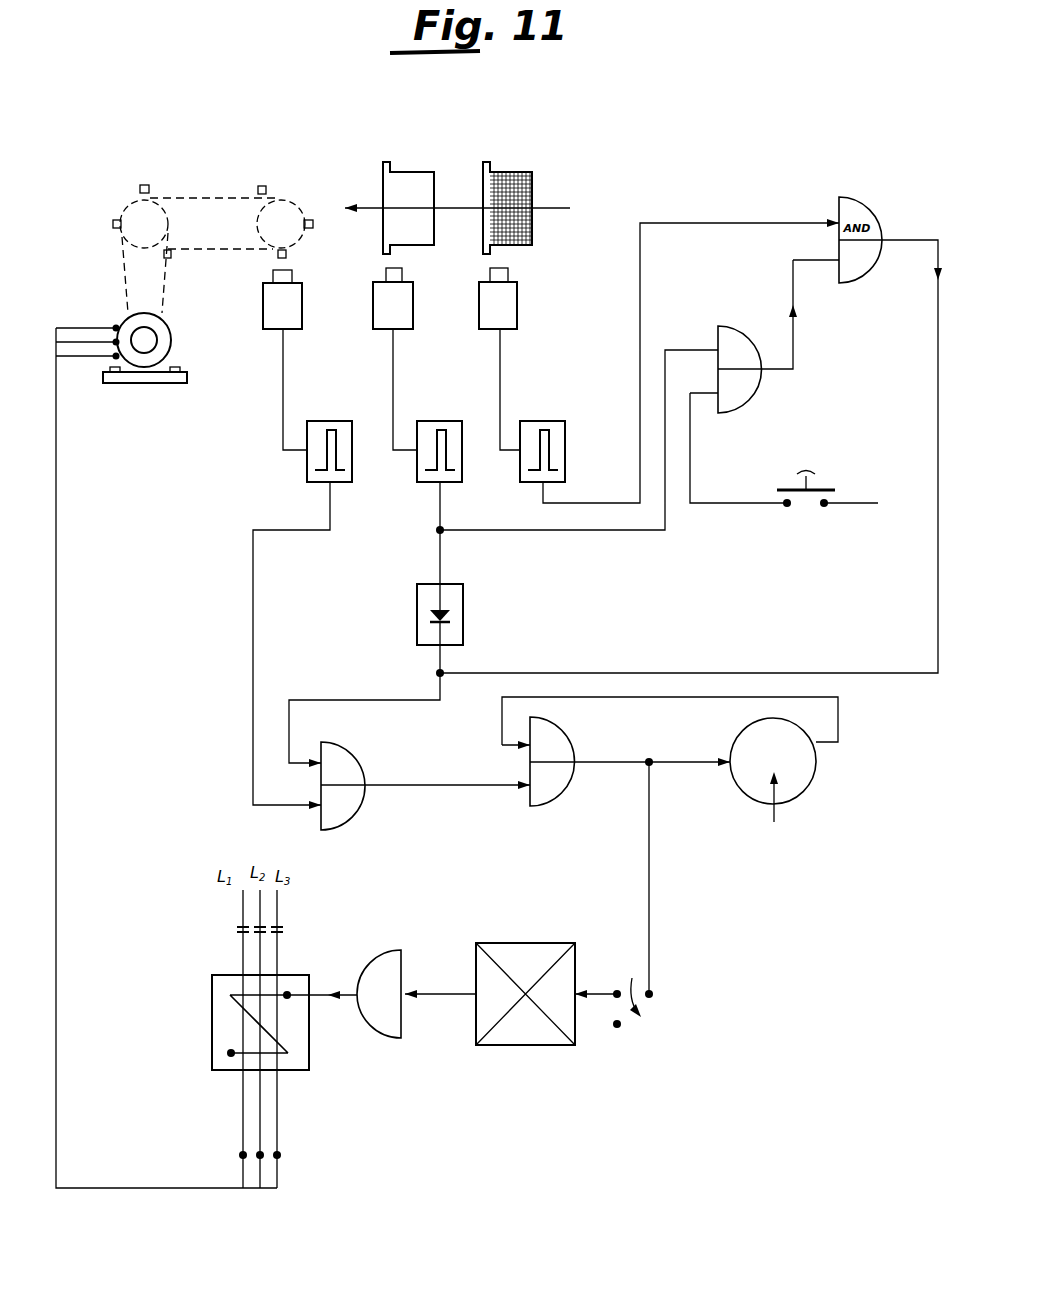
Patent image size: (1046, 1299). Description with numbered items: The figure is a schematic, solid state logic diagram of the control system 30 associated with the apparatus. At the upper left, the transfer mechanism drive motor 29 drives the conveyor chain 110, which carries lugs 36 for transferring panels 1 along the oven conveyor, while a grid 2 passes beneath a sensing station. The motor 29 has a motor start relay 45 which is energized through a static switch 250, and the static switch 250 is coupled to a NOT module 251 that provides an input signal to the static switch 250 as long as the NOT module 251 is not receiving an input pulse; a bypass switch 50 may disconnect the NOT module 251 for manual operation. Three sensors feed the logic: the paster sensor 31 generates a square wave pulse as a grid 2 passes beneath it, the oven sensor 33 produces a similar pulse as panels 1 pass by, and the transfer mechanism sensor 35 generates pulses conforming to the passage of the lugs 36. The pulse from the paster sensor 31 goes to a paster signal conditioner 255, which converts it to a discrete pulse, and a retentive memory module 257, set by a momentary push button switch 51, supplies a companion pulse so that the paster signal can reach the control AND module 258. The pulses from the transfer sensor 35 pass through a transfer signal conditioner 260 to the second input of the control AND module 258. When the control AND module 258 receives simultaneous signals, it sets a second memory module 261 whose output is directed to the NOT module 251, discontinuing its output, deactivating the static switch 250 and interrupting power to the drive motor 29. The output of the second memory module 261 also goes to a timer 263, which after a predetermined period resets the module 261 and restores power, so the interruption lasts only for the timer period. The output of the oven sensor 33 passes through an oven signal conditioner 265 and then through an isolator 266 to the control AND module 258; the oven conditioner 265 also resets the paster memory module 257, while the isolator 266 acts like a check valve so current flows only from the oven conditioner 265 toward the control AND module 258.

The panel 1 is at (415, 174).
The grid 2 is at (518, 174).
The transfer mechanism drive motor 29 is at (117, 310).
The control system 30 is at (710, 836).
The paster sensor 31 is at (503, 306).
The oven sensor 33 is at (382, 310).
The transfer mechanism sensor 35 is at (275, 307).
The lug 36 is at (262, 190).
The motor start relay 45 is at (219, 1022).
The bypass switch 50 is at (656, 1009).
The momentary push button switch 51 is at (793, 506).
The conveyor chain 110 is at (207, 197).
The static switch 250 is at (385, 1016).
The NOT module 251 is at (521, 1031).
The paster signal conditioner 255 is at (550, 425).
The retentive memory module 257 is at (752, 393).
The control AND module 258 is at (345, 808).
The transfer signal conditioner 260 is at (320, 425).
The second memory module 261 is at (556, 800).
The timer 263 is at (813, 775).
The oven signal conditioner 265 is at (432, 425).
The isolator 266 is at (463, 628).